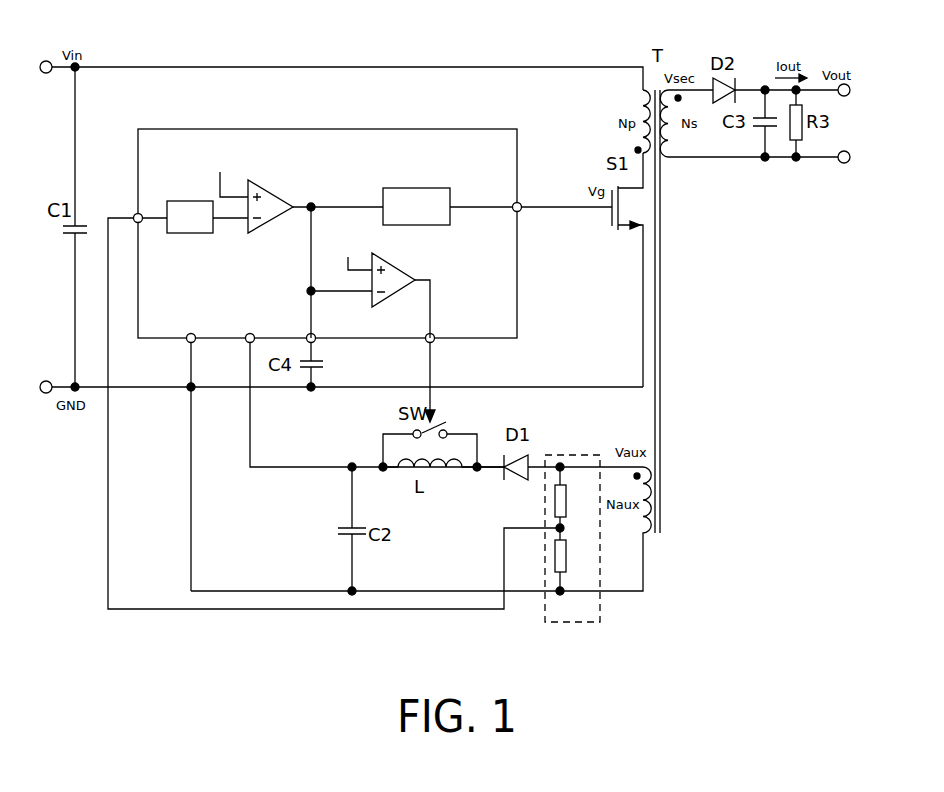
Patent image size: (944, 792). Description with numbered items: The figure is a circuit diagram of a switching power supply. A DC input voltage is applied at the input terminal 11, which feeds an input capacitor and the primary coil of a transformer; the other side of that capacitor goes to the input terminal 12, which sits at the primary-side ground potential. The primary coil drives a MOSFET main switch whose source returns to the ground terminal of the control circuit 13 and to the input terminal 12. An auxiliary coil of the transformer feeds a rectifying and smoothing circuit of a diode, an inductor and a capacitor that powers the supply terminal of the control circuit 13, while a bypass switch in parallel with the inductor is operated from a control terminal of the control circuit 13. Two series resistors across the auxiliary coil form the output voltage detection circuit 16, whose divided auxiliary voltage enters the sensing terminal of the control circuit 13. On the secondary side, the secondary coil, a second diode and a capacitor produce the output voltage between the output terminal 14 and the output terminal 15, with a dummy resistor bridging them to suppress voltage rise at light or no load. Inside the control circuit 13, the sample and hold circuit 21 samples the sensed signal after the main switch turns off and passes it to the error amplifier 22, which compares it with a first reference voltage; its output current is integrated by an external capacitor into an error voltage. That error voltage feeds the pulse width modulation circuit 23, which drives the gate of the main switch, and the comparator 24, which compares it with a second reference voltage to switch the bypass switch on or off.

The input terminal 11 is at (47, 60).
The input terminal 12 is at (47, 381).
The control circuit 13 is at (338, 129).
The output terminal 14 is at (848, 96).
The output terminal 15 is at (848, 163).
The output voltage detection circuit 16 is at (568, 455).
The sample and hold circuit 21 is at (190, 233).
The error amplifier 22 is at (278, 192).
The PWM circuit 23 is at (415, 188).
The comparator 24 is at (404, 272).